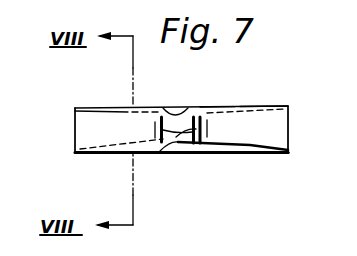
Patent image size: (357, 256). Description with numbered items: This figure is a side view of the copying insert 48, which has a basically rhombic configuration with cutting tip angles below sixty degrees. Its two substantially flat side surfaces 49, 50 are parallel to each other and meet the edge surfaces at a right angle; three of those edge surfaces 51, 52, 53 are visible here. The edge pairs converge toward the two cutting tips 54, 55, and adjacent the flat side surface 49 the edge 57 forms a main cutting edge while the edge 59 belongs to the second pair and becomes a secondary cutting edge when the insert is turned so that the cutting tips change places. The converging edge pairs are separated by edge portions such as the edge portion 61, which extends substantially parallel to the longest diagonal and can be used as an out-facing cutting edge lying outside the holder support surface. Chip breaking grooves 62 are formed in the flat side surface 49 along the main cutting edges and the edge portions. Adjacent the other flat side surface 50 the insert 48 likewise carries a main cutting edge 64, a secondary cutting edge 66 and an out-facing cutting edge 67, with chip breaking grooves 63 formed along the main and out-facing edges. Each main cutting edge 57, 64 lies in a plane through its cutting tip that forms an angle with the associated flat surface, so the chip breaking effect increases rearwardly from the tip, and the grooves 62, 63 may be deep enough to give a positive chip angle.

The insert 48 is at (220, 130).
The flat side surface 49 is at (180, 111).
The flat side surface 50 is at (168, 154).
The edge surface 51 is at (113, 136).
The edge surface 52 is at (199, 150).
The edge surface 53 is at (268, 139).
The cutting tip 54 is at (75, 107).
The cutting tip 55 is at (289, 105).
The main cutting edge 57 is at (113, 107).
The edge 59 is at (261, 107).
The edge portion 61 is at (206, 108).
The chip breaking grooves 62 is at (139, 108).
The chip breaking grooves 63 is at (235, 153).
The main cutting edge 64 is at (257, 154).
The secondary cutting edge 66 is at (142, 151).
The out-facing cutting edge 67 is at (175, 148).